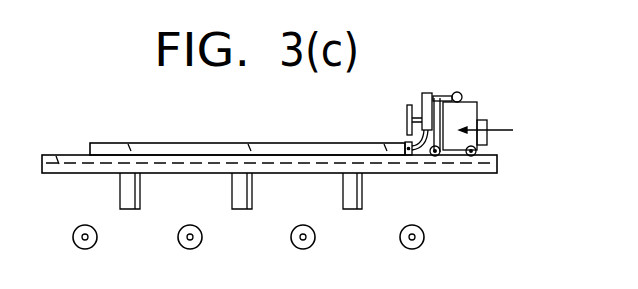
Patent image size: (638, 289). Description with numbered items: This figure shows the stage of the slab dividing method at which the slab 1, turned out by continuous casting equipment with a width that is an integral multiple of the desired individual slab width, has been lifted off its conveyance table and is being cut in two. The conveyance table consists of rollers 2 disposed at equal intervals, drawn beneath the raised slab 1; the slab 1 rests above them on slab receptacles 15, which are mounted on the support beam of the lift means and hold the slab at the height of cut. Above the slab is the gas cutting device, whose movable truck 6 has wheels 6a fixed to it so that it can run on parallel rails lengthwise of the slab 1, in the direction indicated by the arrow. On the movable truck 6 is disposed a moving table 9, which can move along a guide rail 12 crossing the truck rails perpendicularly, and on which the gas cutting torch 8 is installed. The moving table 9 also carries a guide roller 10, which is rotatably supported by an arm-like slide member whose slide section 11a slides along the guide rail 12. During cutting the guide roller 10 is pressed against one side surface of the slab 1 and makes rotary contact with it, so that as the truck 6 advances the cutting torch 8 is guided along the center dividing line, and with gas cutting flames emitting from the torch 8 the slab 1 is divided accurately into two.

The slab 1 is at (252, 147).
The rollers 2 is at (77, 229).
The movable truck 6 is at (476, 110).
The wheels 6a is at (482, 148).
The gas cutting torch 8 is at (407, 110).
The moving table 9 is at (422, 98).
The guide roller 10 is at (404, 143).
The slide section 11a is at (438, 92).
The guide rail 12 is at (452, 93).
The slab receptacles 15 is at (128, 199).